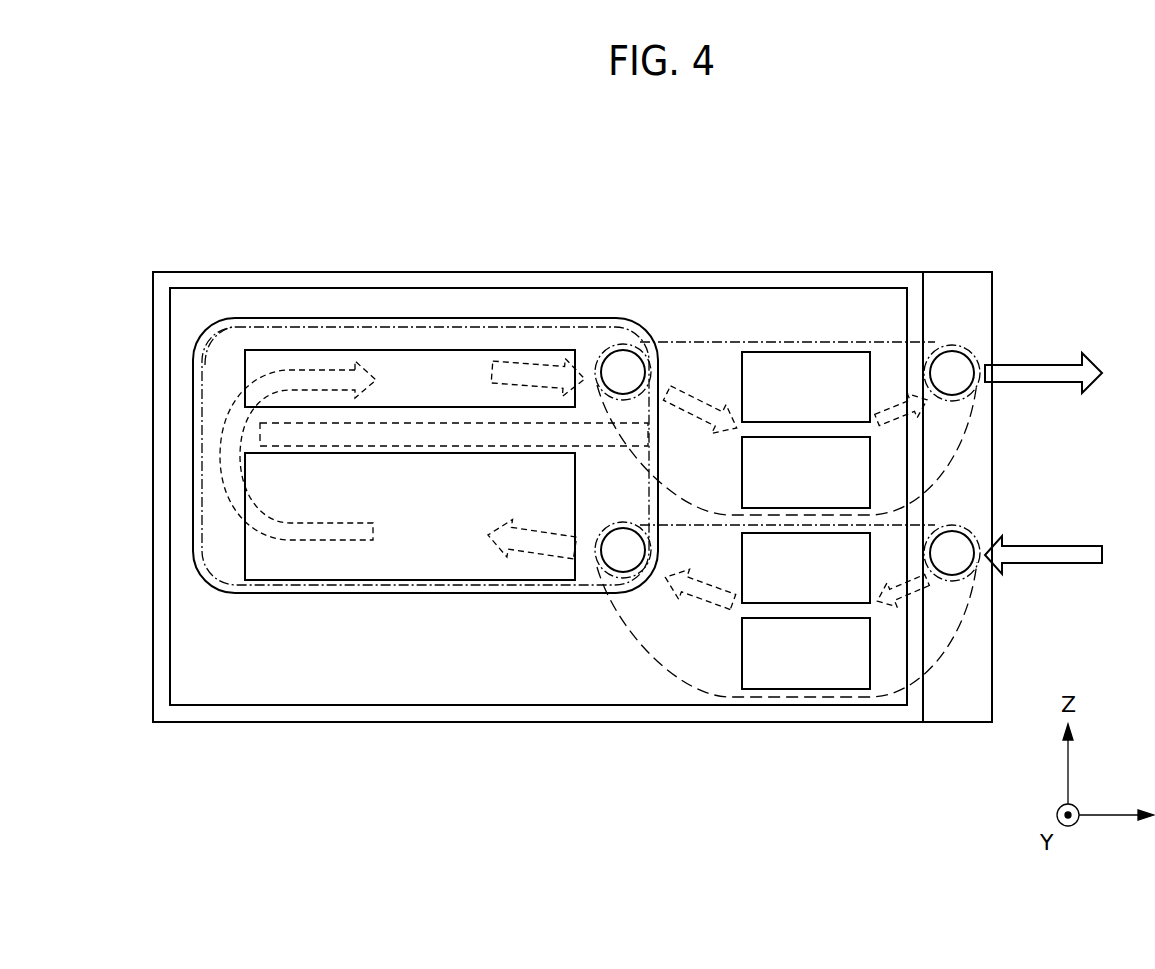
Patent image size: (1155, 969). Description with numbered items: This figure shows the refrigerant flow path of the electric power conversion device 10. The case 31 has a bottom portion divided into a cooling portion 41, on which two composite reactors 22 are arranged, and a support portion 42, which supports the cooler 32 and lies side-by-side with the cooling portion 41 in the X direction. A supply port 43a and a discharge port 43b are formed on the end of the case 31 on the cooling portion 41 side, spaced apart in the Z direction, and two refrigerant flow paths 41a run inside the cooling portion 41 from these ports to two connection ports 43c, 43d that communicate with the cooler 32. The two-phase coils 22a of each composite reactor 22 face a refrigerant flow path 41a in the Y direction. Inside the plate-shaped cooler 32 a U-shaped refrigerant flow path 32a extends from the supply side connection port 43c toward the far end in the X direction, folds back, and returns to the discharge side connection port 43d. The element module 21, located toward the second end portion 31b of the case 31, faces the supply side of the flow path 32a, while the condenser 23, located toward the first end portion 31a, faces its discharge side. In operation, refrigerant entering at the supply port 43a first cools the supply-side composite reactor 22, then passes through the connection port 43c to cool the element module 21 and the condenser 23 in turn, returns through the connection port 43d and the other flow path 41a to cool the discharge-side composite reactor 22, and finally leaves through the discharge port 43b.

The electric power conversion device 10 is at (1154, 154).
The case 31 is at (150, 262).
The first end portion 31a is at (528, 272).
The second end portion 31b is at (517, 722).
The cooler 32 is at (300, 318).
The refrigerant flow path 32a is at (204, 360).
The condenser 23 is at (385, 368).
The element module 21 is at (407, 560).
The support portion 42 is at (466, 292).
The cooling portion 41 is at (787, 292).
The refrigerant flow path 41a is at (956, 446).
The two-phase coil 22a is at (817, 499).
The composite reactor 22 is at (848, 455).
The supply port 43a is at (955, 553).
The discharge port 43b is at (955, 372).
The connection port 43c is at (620, 575).
The connection port 43d is at (622, 372).